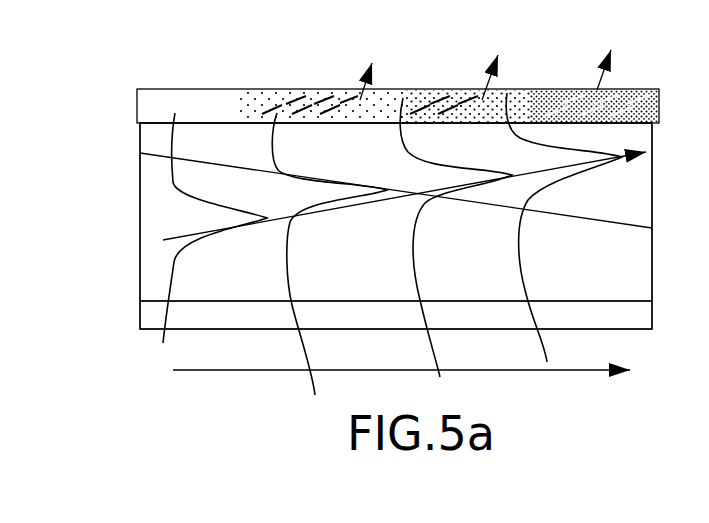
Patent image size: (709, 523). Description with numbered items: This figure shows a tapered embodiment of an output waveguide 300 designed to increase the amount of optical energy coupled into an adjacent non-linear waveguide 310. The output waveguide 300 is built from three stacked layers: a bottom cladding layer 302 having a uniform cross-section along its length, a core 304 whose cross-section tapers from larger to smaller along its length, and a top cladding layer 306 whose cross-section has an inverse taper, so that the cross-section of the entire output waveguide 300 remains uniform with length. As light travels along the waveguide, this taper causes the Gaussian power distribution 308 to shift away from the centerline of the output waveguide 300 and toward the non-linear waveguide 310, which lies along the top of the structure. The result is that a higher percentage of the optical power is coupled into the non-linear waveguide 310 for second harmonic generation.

The output waveguide 300 is at (132, 128).
The bottom cladding layer 302 is at (260, 326).
The core 304 is at (376, 267).
The top cladding layer 306 is at (376, 162).
The Gaussian power distribution 308 is at (290, 237).
The non-linear waveguide 310 is at (256, 108).